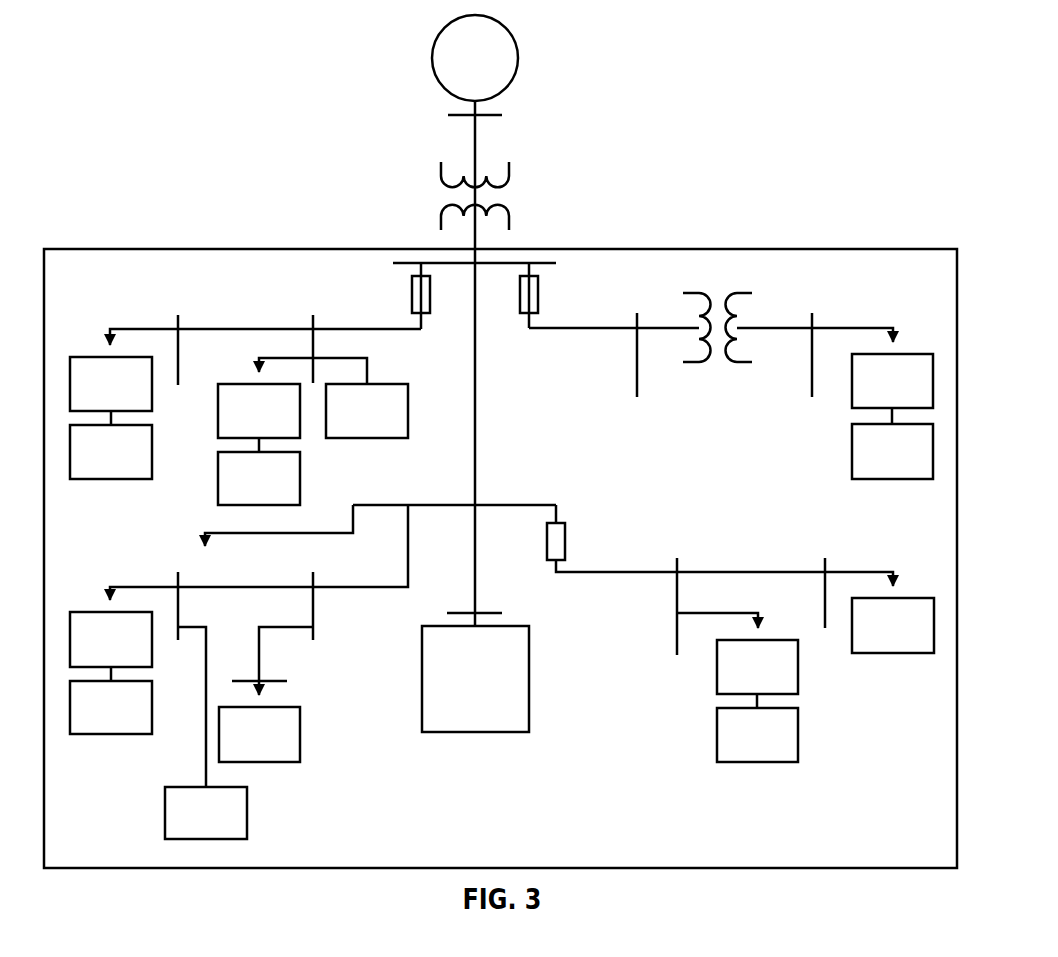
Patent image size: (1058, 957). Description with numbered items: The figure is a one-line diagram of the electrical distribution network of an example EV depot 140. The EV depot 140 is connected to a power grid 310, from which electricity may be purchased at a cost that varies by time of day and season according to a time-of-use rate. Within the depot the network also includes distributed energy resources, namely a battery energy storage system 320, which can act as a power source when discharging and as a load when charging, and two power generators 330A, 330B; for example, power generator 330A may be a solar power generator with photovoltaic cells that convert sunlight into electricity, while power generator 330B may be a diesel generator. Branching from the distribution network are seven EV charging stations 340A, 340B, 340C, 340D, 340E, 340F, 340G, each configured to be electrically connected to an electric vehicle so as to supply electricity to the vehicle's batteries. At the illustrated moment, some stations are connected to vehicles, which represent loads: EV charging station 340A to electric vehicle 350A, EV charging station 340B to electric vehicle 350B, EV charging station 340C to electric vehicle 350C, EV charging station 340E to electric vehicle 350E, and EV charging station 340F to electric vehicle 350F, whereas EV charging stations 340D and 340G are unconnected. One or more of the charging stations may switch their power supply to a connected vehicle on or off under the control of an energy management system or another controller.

The EV depot 140 is at (744, 248).
The power grid 310 is at (475, 58).
The battery energy storage (BES) system 320 is at (475, 679).
The power generator 330A is at (367, 411).
The power generator 330B is at (206, 813).
The EV charging station 340A is at (259, 418).
The EV charging station 340B is at (111, 391).
The EV charging station 340C is at (892, 389).
The EV charging station 340D is at (259, 734).
The EV charging station 340E is at (111, 646).
The EV charging station 340F is at (757, 674).
The EV charging station 340G is at (893, 625).
The electric vehicle 350A is at (259, 478).
The electric vehicle 350B is at (111, 452).
The electric vehicle 350C is at (892, 451).
The electric vehicle 350E is at (111, 707).
The electric vehicle 350F is at (757, 735).